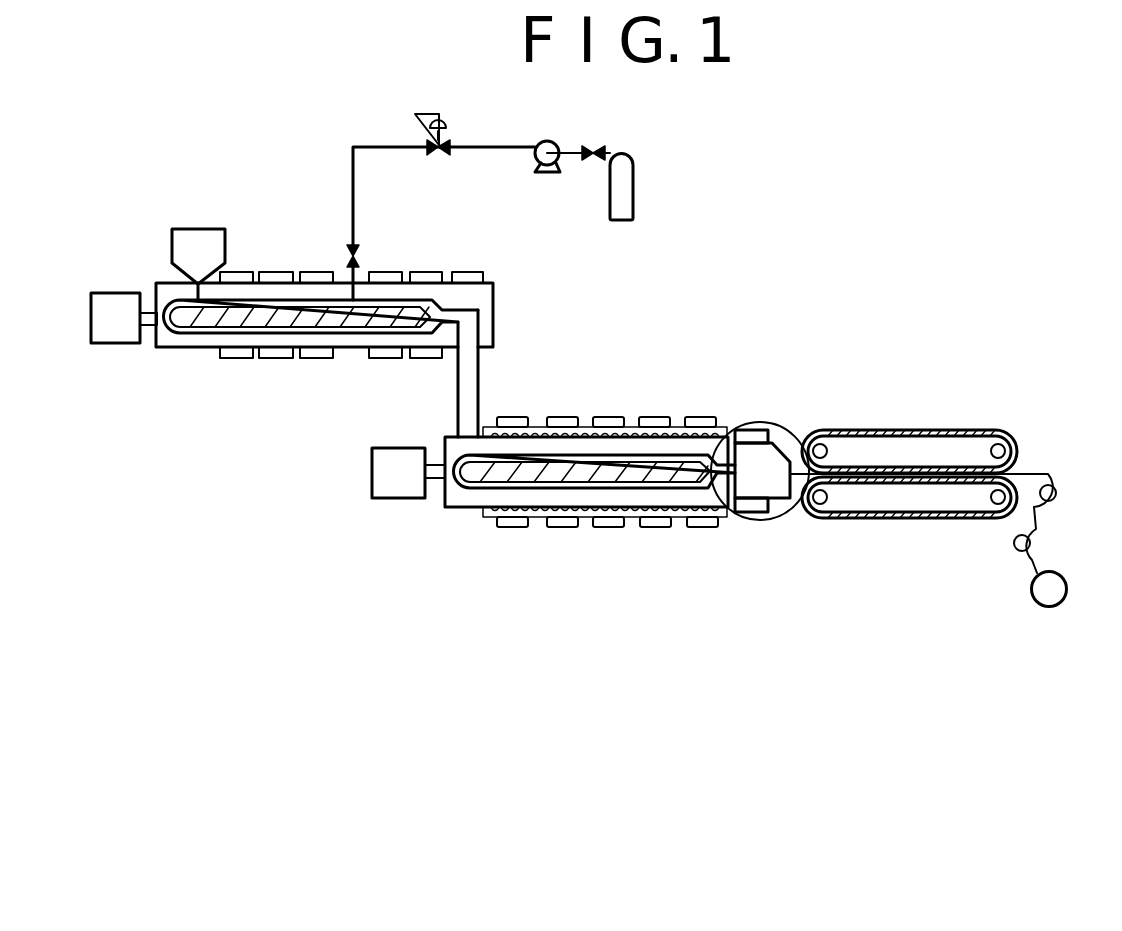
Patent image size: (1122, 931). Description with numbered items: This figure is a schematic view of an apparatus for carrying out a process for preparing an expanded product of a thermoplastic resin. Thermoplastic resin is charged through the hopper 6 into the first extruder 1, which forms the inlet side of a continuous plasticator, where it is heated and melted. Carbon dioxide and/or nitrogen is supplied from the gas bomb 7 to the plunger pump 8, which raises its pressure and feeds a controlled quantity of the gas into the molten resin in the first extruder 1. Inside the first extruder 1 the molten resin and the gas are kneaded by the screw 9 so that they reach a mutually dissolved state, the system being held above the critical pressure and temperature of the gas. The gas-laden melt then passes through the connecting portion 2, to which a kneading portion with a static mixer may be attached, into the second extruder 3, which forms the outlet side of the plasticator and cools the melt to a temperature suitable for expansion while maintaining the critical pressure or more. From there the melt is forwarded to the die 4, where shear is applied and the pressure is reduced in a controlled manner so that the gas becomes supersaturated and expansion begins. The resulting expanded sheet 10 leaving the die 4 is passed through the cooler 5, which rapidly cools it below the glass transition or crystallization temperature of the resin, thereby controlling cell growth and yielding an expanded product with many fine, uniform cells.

The first extruder 1 is at (187, 352).
The connecting portion 2 is at (482, 378).
The second extruder 3 is at (488, 497).
The die 4 is at (772, 443).
The cooler 5 is at (922, 498).
The hopper 6 is at (198, 230).
The gas bomb 7 is at (633, 180).
The plunger pump 8 is at (549, 173).
The screw 9 is at (355, 320).
The expanded sheet 10 is at (1043, 518).